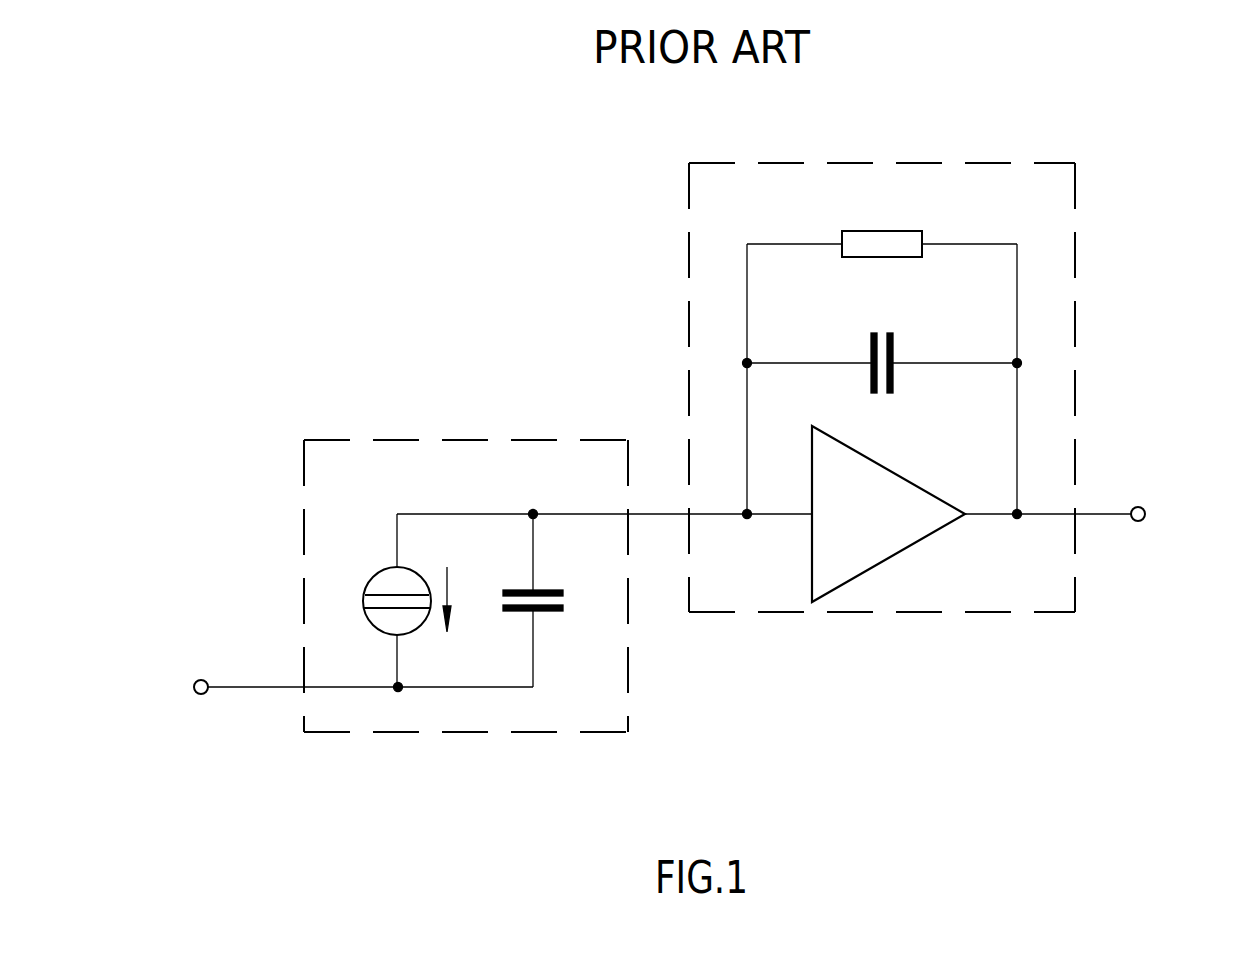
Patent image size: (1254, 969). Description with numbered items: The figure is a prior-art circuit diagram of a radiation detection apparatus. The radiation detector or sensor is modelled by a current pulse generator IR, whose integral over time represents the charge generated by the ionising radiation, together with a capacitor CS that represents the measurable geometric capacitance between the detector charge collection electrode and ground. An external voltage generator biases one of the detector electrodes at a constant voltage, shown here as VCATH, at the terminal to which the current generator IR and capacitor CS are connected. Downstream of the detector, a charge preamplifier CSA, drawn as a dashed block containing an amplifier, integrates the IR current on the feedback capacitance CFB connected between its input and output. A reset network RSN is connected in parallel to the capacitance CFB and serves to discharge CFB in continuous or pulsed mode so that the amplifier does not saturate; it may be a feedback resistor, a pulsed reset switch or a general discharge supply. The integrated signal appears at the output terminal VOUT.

The reset network RSN is at (884, 212).
The charge preamplifier CSA is at (1105, 266).
The feedback capacitance CFB is at (882, 339).
The current pulse generator IR is at (390, 600).
The detector capacitor CS is at (548, 600).
The constant bias voltage VCATH is at (167, 666).
The output voltage VOUT is at (1161, 491).